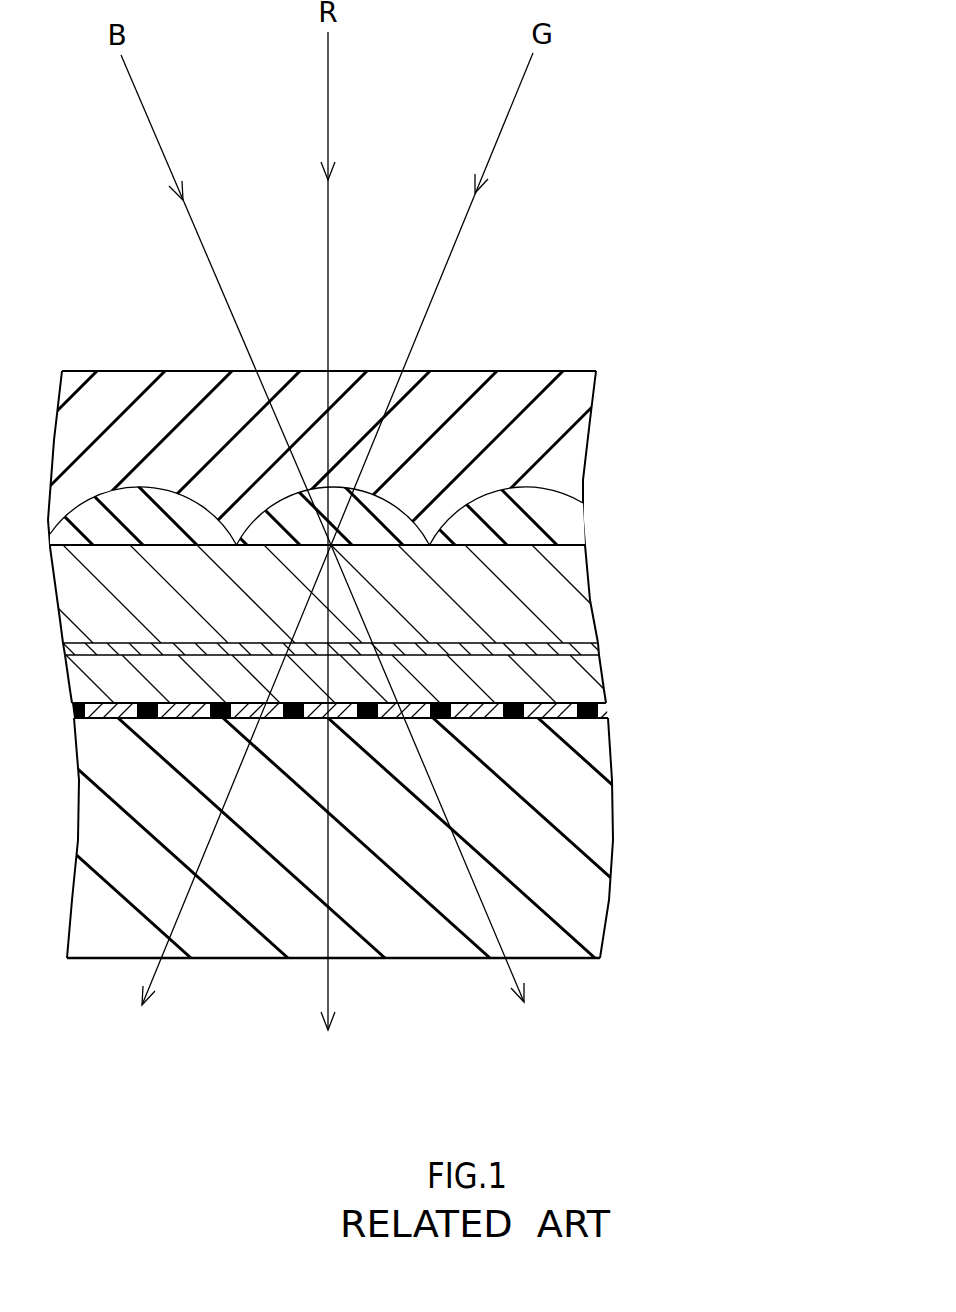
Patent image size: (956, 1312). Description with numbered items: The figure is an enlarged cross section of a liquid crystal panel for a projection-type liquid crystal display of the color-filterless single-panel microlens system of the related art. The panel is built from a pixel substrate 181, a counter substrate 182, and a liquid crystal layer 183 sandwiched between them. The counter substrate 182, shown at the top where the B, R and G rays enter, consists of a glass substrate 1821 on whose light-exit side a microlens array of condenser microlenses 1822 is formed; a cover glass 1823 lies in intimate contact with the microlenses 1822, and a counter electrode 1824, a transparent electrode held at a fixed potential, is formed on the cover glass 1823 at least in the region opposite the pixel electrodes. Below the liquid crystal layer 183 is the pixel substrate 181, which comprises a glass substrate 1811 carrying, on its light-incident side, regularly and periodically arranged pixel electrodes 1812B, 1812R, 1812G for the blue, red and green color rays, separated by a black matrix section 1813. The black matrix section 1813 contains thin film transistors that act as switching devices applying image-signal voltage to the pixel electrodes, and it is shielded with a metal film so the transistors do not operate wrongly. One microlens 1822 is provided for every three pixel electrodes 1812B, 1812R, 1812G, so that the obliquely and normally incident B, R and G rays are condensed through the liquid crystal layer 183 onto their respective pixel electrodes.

The pixel substrate 181 is at (420, 883).
The glass substrate 1811 is at (403, 950).
The pixel electrode for B color ray 1812B is at (418, 718).
The pixel electrode for R color ray 1812R is at (333, 718).
The pixel electrode for G color ray 1812G is at (243, 710).
The black matrix section 1813 is at (222, 718).
The counter substrate 182 is at (411, 525).
The glass substrate 1821 is at (557, 384).
The condenser microlens 1822 is at (558, 515).
The cover glass 1823 is at (560, 565).
The counter electrode 1824 is at (598, 644).
The liquid crystal layer 183 is at (359, 679).